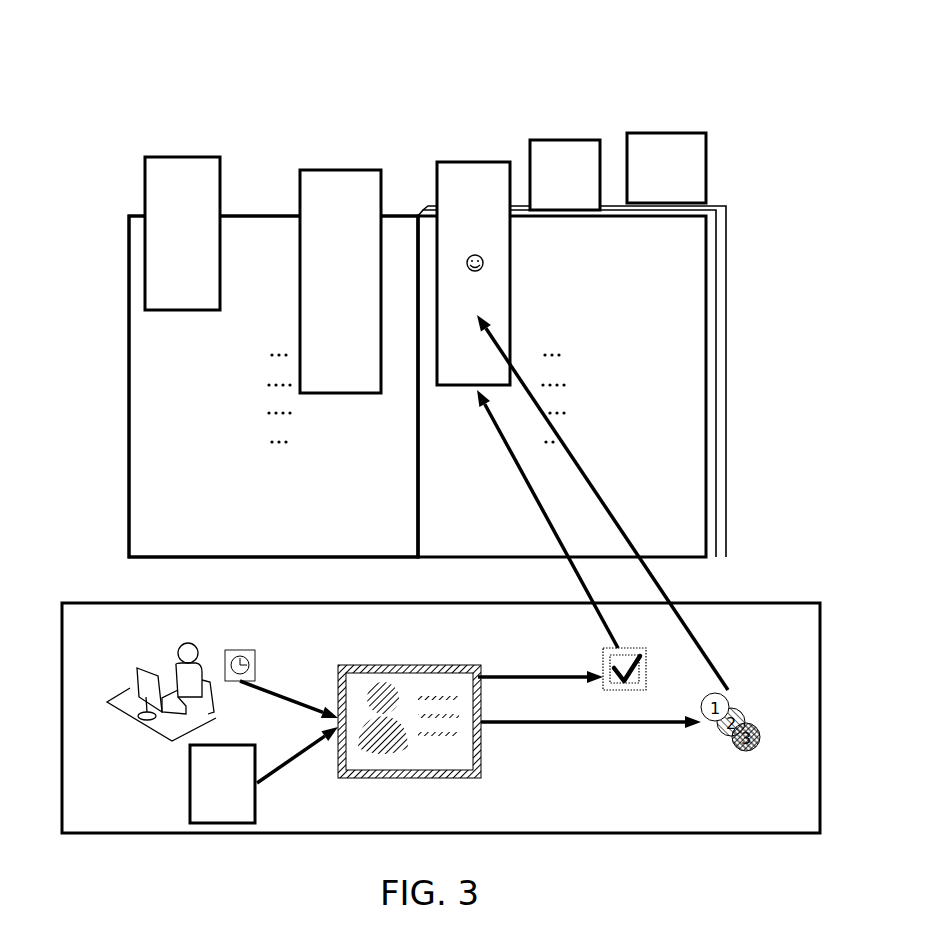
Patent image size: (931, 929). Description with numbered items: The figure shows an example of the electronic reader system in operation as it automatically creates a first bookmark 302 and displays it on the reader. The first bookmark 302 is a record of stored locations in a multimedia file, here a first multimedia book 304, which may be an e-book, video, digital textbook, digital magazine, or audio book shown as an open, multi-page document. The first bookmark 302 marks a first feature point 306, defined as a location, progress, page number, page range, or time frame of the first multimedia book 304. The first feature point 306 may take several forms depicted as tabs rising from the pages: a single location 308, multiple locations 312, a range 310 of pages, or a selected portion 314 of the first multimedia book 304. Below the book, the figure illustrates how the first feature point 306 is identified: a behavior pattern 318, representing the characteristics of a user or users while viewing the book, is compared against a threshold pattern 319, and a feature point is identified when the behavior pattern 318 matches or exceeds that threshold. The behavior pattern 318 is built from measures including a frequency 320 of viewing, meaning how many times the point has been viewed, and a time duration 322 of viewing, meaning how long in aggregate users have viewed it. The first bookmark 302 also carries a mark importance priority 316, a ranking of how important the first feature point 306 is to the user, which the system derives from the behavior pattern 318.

The first bookmark 302 is at (512, 272).
The first multimedia book 304 is at (260, 240).
The first feature point 306 is at (493, 172).
The single location 308 is at (558, 172).
The range 310 is at (360, 177).
The locations 312 is at (645, 147).
The selected portion 314 is at (172, 178).
The mark importance priority 316 is at (488, 287).
The behavior pattern 318 is at (398, 670).
The threshold pattern 319 is at (597, 660).
The frequency 320 is at (222, 823).
The time duration 322 is at (226, 661).